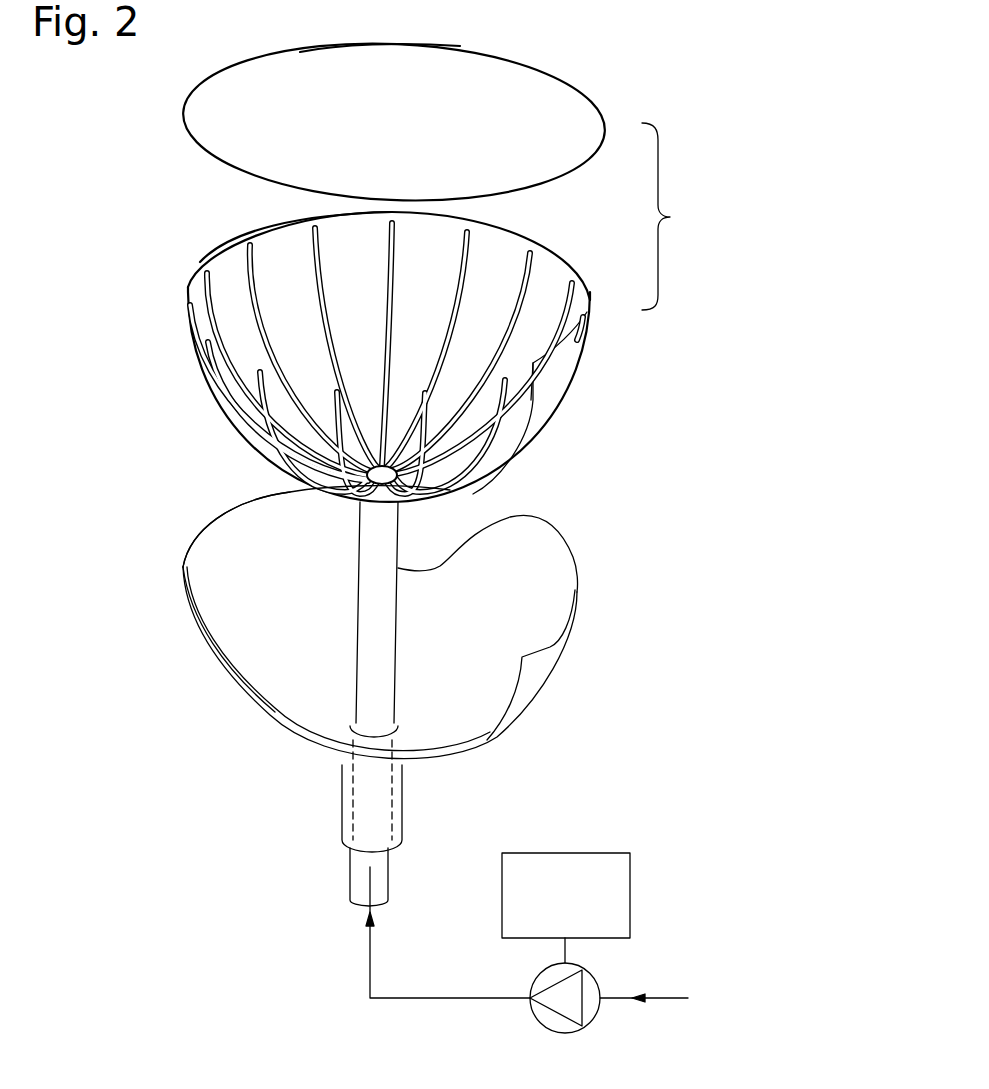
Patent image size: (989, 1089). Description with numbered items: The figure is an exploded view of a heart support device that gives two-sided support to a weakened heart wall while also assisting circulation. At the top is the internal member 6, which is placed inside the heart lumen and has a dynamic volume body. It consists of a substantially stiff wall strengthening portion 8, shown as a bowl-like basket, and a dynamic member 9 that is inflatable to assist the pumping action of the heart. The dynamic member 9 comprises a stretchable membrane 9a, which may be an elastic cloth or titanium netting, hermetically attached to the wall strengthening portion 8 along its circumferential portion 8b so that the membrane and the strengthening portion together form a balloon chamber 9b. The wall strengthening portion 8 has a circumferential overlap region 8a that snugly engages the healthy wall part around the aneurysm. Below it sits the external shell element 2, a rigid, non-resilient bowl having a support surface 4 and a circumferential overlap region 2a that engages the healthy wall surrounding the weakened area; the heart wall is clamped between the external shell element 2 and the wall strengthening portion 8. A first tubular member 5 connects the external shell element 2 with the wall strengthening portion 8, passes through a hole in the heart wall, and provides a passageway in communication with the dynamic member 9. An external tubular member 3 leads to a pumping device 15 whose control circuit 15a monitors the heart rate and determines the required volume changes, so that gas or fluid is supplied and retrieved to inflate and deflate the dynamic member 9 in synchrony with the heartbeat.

The external shell element 2 is at (551, 648).
The circumferential overlap region 2a is at (196, 549).
The external tubular member 3 is at (398, 834).
The support surface 4 is at (245, 667).
The first tubular member 5 is at (453, 491).
The internal member 6 is at (669, 216).
The wall strengthening portion 8 is at (190, 289).
The circumferential overlap region 8a is at (553, 381).
The circumferential portion 8b is at (240, 245).
The dynamic member 9 is at (575, 86).
The stretchable membrane 9a is at (432, 46).
The balloon chamber 9b is at (510, 262).
The pumping device 15 is at (588, 990).
The control circuit 15a is at (582, 854).